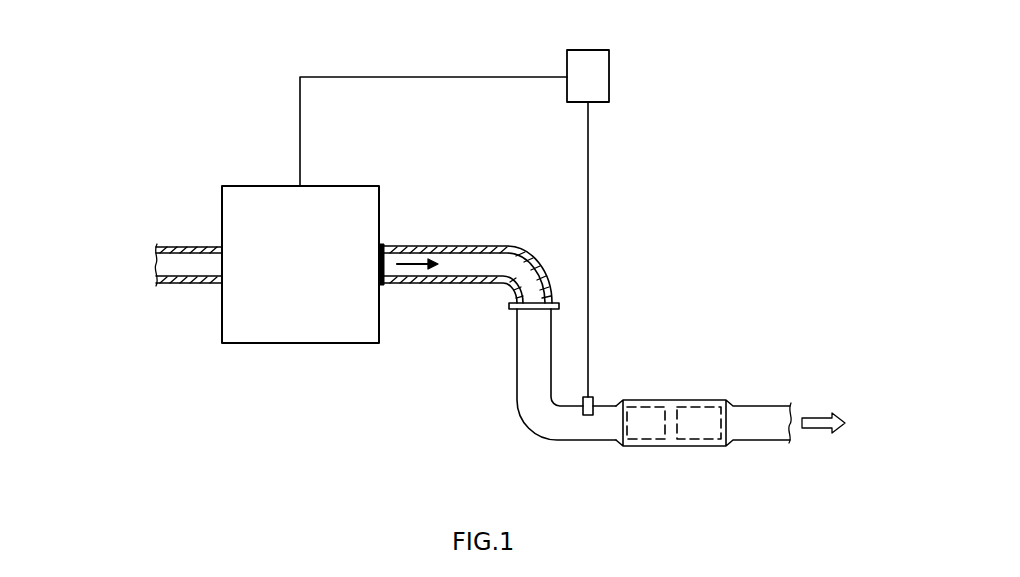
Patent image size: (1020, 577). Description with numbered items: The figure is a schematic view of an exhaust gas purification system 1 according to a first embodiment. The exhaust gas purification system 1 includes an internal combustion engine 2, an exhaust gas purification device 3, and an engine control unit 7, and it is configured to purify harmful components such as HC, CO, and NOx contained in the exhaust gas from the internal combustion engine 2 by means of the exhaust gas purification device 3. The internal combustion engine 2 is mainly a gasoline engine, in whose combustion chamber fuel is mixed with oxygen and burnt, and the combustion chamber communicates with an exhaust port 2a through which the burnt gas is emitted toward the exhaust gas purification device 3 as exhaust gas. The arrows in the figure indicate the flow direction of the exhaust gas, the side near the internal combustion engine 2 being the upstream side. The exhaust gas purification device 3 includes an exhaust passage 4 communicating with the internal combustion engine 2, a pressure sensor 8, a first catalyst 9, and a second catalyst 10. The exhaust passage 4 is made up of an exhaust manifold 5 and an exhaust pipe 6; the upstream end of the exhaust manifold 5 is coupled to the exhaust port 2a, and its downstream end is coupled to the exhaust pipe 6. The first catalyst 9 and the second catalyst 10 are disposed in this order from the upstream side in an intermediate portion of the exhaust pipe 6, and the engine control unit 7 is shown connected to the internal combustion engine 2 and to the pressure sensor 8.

The exhaust gas purification system 1 is at (762, 80).
The internal combustion engine 2 is at (286, 346).
The exhaust port 2a is at (385, 262).
The exhaust gas purification device 3 is at (704, 271).
The exhaust passage 4 is at (500, 343).
The exhaust manifold 5 is at (452, 286).
The exhaust pipe 6 is at (516, 353).
The engine control unit (ECU) 7 is at (609, 68).
The pressure sensor 8 is at (588, 416).
The first catalyst 9 is at (645, 402).
The second catalyst 10 is at (696, 402).